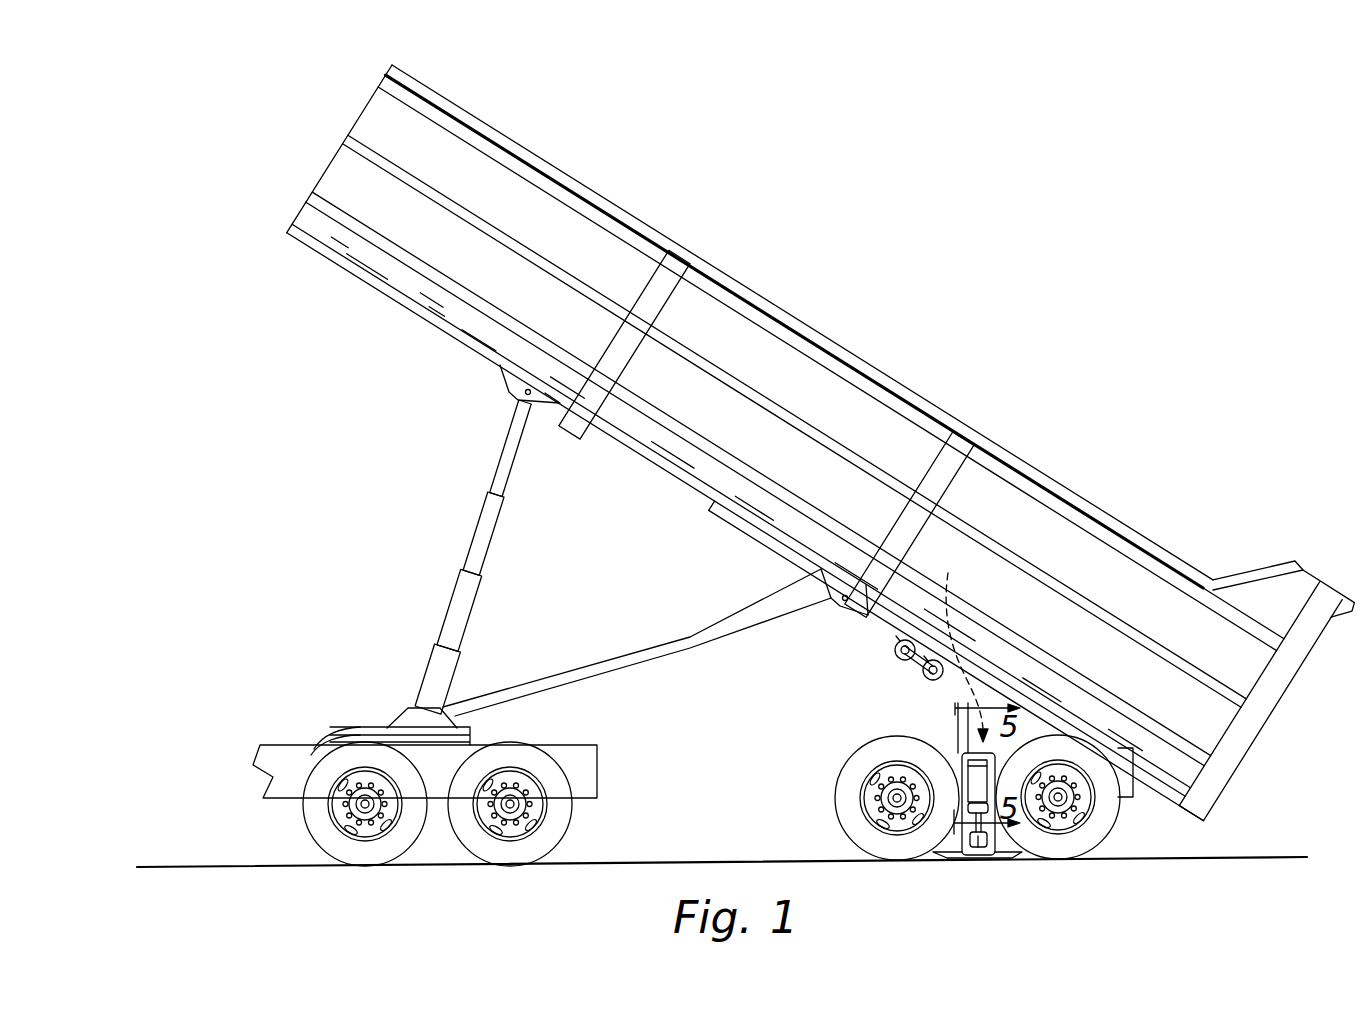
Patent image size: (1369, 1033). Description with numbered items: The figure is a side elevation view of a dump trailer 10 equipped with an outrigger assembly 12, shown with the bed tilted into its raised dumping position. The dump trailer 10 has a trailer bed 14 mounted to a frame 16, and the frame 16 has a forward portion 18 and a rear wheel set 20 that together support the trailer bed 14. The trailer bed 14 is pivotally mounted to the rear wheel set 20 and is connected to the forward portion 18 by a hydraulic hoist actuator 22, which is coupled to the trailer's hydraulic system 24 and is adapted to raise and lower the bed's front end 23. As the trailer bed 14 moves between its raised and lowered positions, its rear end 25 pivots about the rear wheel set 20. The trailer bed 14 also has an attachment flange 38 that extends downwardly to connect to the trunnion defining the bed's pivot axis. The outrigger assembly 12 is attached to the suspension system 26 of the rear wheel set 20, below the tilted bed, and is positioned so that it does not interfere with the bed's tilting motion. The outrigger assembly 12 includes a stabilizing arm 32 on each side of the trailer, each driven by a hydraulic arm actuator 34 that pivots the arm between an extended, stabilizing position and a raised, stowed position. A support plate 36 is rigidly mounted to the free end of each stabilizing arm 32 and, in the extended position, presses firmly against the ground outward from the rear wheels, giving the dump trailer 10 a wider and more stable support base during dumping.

The dump trailer 10 is at (1088, 558).
The outrigger assembly 12 is at (978, 810).
The trailer bed 14 is at (830, 384).
The frame 16 is at (380, 706).
The forward portion 18 is at (352, 838).
The rear wheel set 20 is at (895, 826).
The hydraulic hoist actuator 22 is at (477, 532).
The front end of the trailer bed 23 is at (580, 440).
The hydraulic system 24 is at (892, 670).
The rear end of the trailer bed 25 is at (1284, 678).
The suspension system 26 is at (962, 647).
The stabilizing arm 32 is at (988, 828).
The hydraulic arm actuator 34 is at (968, 798).
The support plate 36 is at (988, 858).
The attachment flange 38 is at (993, 690).